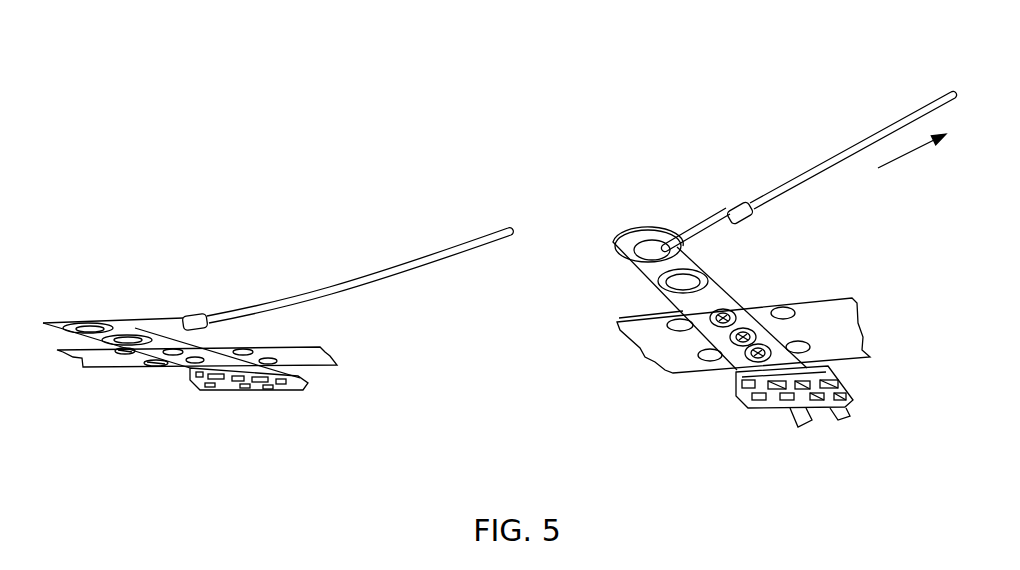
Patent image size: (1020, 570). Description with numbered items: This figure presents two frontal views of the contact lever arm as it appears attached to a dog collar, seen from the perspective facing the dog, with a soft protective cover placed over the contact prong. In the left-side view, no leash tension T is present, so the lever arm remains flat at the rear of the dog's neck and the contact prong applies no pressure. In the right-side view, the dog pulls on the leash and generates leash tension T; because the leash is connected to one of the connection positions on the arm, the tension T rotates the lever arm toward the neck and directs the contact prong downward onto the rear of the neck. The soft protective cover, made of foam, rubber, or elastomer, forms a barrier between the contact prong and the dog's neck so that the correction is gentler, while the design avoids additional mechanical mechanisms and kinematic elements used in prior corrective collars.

The leash tension T is at (901, 162).